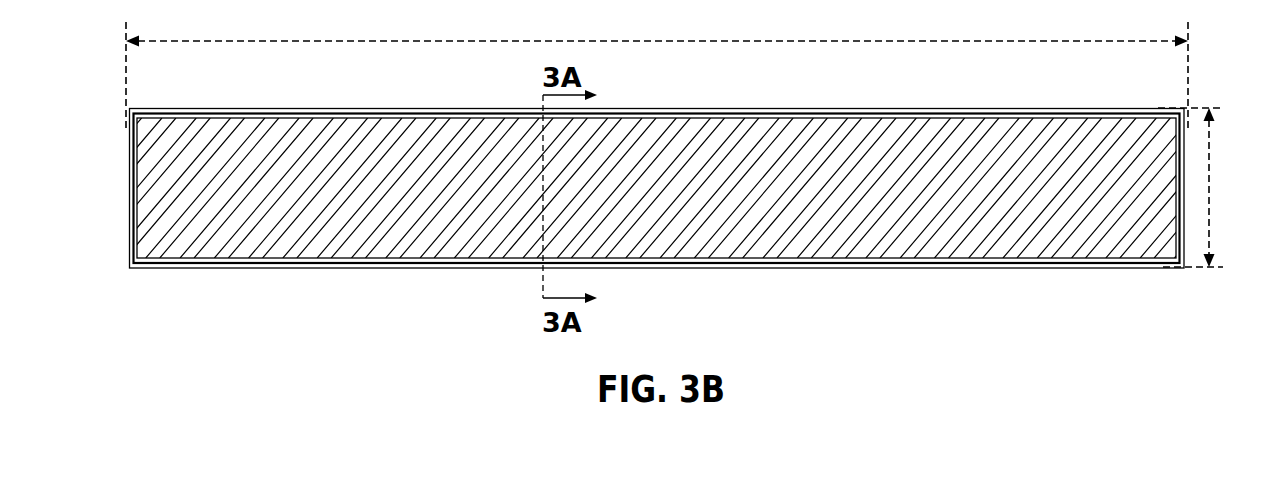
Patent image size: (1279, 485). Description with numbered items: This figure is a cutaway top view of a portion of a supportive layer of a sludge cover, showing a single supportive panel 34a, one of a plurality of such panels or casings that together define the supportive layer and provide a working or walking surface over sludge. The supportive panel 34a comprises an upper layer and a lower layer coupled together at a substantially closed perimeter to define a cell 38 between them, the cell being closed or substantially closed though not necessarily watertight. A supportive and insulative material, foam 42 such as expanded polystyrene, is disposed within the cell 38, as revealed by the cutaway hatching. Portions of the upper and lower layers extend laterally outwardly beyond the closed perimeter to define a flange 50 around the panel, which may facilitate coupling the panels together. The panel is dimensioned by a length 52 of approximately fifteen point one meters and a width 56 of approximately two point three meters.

The supportive panel 34a is at (651, 225).
The cell 38 is at (258, 263).
The foam 42 is at (230, 240).
The flange 50 is at (307, 268).
The length 52 is at (657, 76).
The width 56 is at (1211, 187).